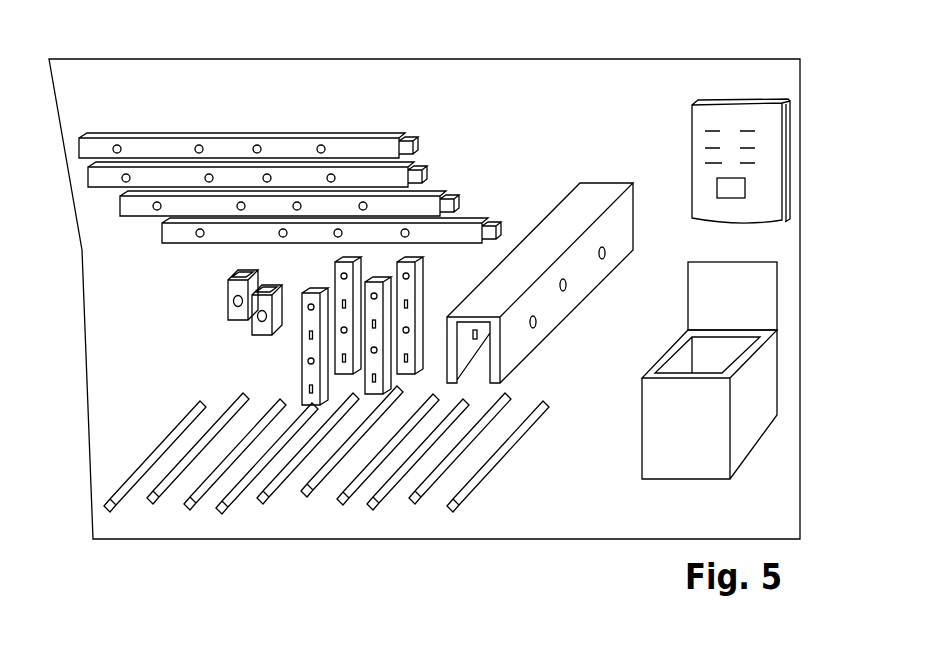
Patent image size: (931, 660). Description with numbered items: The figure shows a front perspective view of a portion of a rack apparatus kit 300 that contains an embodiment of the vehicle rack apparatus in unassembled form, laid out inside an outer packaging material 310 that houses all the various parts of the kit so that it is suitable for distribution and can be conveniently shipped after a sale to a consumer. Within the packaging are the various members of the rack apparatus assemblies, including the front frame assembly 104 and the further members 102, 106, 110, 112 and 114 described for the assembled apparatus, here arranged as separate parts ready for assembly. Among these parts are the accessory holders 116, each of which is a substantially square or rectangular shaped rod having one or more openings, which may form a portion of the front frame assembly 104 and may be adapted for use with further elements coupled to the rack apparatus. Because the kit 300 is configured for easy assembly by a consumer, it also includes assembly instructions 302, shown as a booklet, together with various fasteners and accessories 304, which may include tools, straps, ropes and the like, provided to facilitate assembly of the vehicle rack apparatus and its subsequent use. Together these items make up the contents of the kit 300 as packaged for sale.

The rack apparatus kit 300 is at (452, 319).
The outer packaging material 310 is at (800, 478).
The assembly member 106 is at (370, 133).
The front frame assembly 104 is at (450, 195).
The accessory holder 116 is at (263, 332).
The assembly member 112 is at (302, 358).
The assembly member 102 is at (508, 375).
The assembly member 114 is at (116, 507).
The assembly member 110 is at (378, 505).
The assembly instructions 302 is at (780, 188).
The fasteners and accessories 304 is at (760, 390).